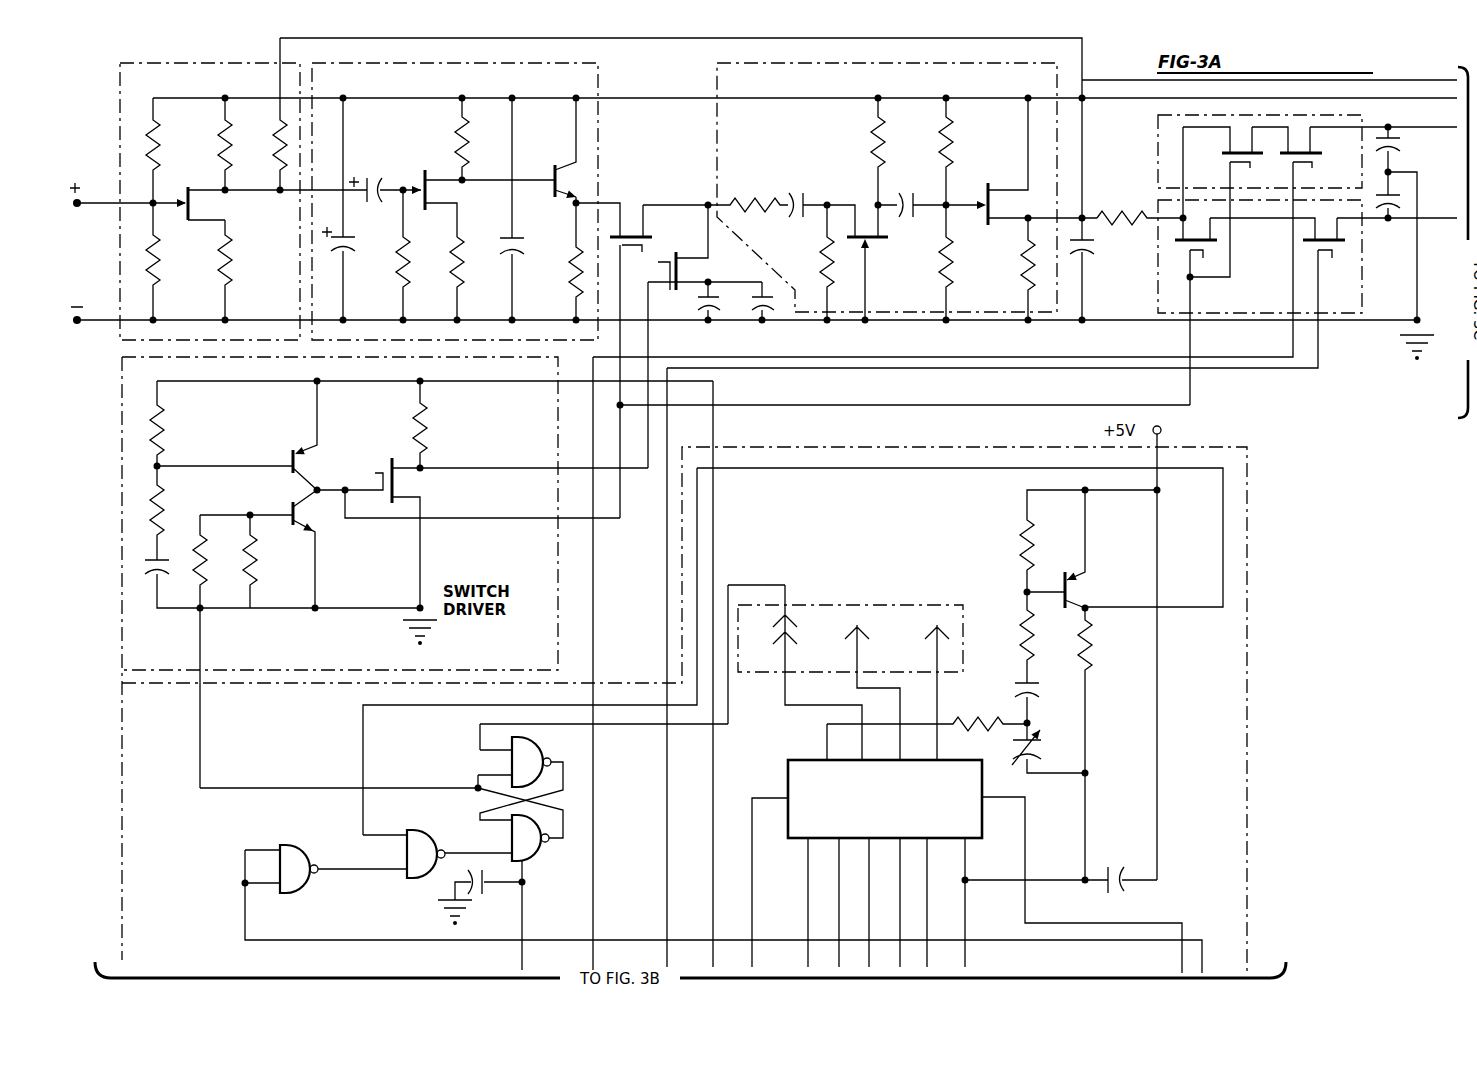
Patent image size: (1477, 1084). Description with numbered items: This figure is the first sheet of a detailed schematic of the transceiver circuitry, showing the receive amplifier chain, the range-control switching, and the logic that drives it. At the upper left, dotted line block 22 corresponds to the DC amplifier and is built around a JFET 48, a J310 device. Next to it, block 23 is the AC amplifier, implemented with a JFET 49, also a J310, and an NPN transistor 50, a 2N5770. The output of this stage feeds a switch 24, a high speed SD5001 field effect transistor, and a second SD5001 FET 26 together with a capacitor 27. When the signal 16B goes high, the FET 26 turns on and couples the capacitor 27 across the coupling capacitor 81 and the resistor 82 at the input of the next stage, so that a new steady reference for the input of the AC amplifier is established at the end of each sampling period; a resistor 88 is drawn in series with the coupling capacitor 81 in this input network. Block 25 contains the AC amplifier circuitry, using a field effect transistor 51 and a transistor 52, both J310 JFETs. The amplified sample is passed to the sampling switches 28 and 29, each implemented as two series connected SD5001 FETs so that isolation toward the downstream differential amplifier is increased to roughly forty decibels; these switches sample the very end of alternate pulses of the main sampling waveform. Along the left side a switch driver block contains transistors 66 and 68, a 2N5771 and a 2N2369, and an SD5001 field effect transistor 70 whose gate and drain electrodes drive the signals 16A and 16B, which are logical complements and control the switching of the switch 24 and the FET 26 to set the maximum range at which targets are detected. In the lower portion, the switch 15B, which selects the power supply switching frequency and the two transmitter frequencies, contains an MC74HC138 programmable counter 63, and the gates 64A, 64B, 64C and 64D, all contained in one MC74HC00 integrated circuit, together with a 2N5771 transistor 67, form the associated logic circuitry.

The DC amplifier 22 is at (130, 68).
The AC amplifier 23 is at (598, 65).
The AC amplifier 25 is at (718, 65).
The switch 24 is at (648, 226).
The FET 26 is at (705, 336).
The capacitor 27 is at (768, 344).
The resistor 88 is at (746, 204).
The coupling capacitor 81 is at (806, 204).
The resistor 82 is at (818, 260).
The field effect transistor 51 is at (880, 240).
The transistor 52 is at (998, 186).
The JFET 48 is at (186, 190).
The JFET 49 is at (418, 176).
The NPN transistor 50 is at (553, 172).
The switch 28 is at (1158, 130).
The switch 29 is at (1158, 285).
The transistor 66 is at (288, 450).
The transistor 68 is at (300, 528).
The field effect transistor 70 is at (390, 460).
The signal 16A is at (470, 496).
The signal 16B is at (476, 444).
The switch 15B is at (786, 447).
The transistor 67 is at (1066, 574).
The programmable counter 63 is at (782, 766).
The AND gate 64A is at (309, 848).
The AND gate 64B is at (434, 836).
The AND gate 64C is at (548, 748).
The AND gate 64D is at (548, 860).